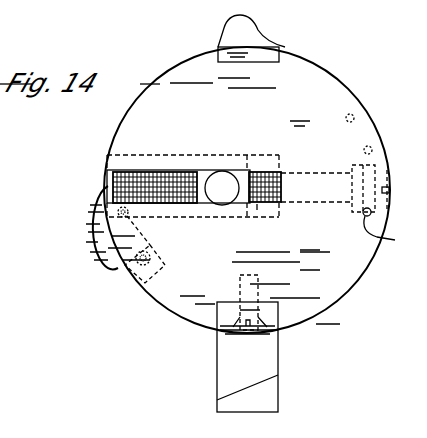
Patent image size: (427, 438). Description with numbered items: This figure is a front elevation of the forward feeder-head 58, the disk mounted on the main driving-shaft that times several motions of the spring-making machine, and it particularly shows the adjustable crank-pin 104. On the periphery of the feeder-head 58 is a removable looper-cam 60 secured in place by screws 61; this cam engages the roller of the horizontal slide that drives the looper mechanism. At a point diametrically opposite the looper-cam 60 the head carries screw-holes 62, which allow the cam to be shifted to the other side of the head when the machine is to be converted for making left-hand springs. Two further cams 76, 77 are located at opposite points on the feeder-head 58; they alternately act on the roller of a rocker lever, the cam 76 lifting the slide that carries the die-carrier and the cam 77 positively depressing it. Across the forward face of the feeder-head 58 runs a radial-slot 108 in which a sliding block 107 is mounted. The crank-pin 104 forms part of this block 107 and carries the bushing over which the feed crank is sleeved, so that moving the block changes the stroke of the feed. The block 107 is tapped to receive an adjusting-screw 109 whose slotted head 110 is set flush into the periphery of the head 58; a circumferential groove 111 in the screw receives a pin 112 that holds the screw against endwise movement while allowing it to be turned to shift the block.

The forward feeder-head 58 is at (342, 100).
The cam 76 is at (252, 27).
The cam 77 is at (250, 388).
The removable looper-cam 60 is at (90, 250).
The screws 61 is at (152, 247).
The screw-holes 62 is at (364, 148).
The adjustable crank-pin 104 is at (219, 182).
The sliding block 107 is at (249, 180).
The radial-slot 108 is at (133, 170).
The adjusting-screw 109 is at (263, 205).
The slotted head 110 is at (377, 212).
The circumferential groove 111 is at (372, 183).
The pin 112 is at (395, 234).